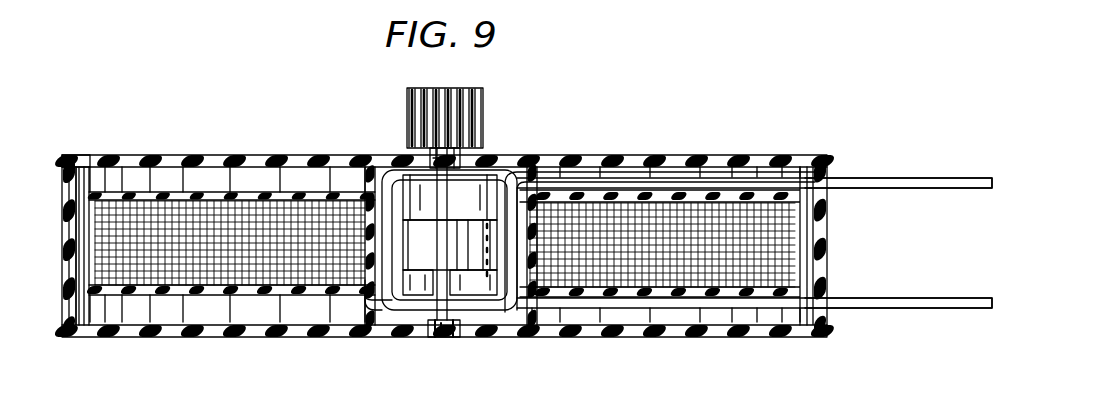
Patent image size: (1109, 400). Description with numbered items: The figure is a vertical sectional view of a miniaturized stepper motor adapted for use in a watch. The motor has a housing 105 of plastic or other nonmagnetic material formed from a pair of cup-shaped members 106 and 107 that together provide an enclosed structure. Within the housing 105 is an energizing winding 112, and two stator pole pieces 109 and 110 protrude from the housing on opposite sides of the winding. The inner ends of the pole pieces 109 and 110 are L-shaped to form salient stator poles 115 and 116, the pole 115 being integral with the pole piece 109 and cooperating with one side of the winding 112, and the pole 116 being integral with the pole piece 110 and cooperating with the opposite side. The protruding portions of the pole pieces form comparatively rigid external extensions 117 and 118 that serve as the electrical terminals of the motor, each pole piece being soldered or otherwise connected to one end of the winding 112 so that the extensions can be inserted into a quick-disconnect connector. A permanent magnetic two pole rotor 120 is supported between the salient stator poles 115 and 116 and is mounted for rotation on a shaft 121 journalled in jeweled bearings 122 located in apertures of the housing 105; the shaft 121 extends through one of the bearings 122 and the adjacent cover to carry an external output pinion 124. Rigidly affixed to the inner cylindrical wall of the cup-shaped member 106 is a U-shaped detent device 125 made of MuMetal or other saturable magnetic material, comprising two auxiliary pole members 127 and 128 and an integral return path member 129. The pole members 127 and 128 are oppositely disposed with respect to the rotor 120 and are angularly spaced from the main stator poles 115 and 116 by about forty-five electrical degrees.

The housing 105 is at (812, 121).
The cup-shaped member 106 is at (70, 162).
The cup-shaped member 107 is at (66, 333).
The stator pole piece 109 is at (962, 178).
The stator pole piece 110 is at (962, 308).
The energizing winding 112 is at (237, 250).
The salient stator pole 115 is at (520, 268).
The salient stator pole 116 is at (368, 260).
The external extension 117 is at (888, 165).
The external extension 118 is at (898, 308).
The permanent magnetic two pole rotor 120 is at (465, 258).
The shaft 121 is at (462, 198).
The jeweled bearing 122 is at (430, 160).
The external output pinion 124 is at (472, 92).
The detent device 125 is at (514, 178).
The auxiliary pole member 127 is at (387, 187).
The auxiliary pole member 128 is at (493, 268).
The return path member 129 is at (448, 205).